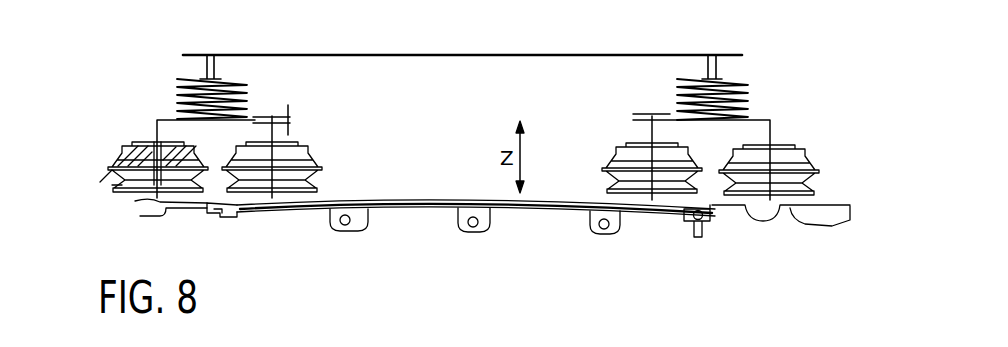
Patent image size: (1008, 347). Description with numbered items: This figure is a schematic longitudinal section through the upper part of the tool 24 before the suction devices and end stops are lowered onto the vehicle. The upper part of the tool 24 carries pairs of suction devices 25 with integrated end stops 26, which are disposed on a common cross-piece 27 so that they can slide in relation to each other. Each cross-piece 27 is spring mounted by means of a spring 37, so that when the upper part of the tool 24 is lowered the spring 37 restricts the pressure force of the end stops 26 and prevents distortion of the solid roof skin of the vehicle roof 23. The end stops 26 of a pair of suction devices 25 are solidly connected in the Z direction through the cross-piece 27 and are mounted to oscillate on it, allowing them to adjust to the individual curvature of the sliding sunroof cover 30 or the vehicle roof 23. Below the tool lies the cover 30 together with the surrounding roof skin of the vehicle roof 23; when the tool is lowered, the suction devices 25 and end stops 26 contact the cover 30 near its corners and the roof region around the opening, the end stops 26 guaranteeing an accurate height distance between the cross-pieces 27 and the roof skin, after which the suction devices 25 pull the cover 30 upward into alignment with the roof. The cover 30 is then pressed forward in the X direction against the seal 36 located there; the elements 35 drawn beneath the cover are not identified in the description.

The vehicle roof 23 is at (135, 201).
The upper part of the tool 24 is at (448, 55).
The suction device 25 is at (125, 143).
The end stop 26 is at (120, 182).
The cross-piece 27 is at (163, 118).
The sliding sunroof cover 30 is at (417, 198).
The retainer 35 is at (360, 224).
The seal 36 is at (207, 217).
The spring 37 is at (243, 95).